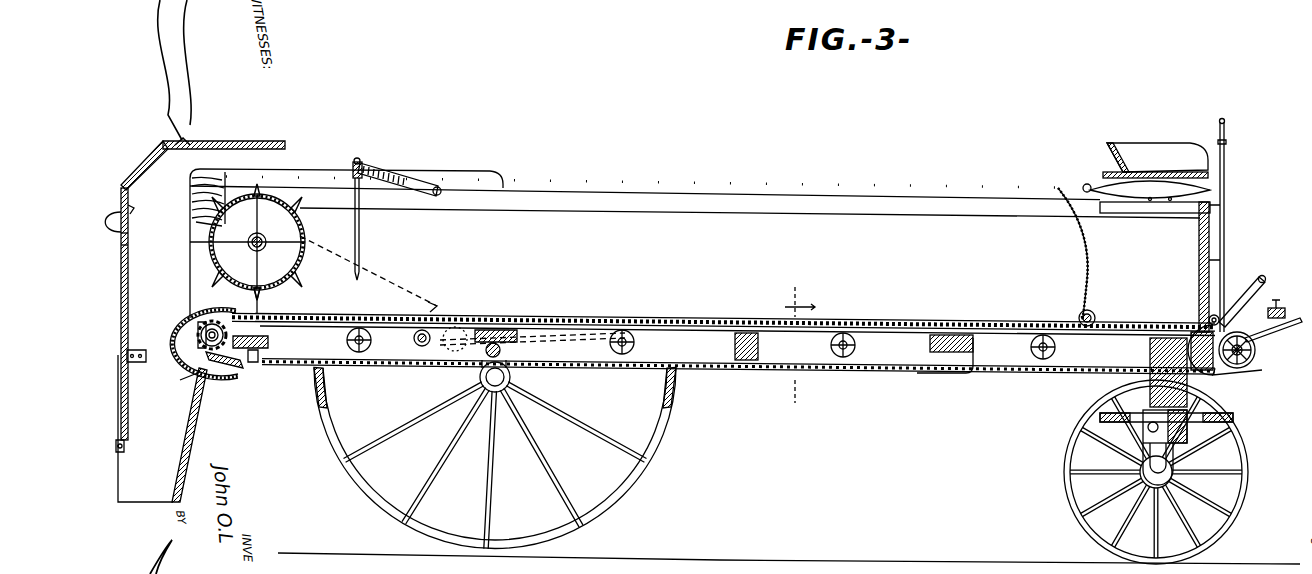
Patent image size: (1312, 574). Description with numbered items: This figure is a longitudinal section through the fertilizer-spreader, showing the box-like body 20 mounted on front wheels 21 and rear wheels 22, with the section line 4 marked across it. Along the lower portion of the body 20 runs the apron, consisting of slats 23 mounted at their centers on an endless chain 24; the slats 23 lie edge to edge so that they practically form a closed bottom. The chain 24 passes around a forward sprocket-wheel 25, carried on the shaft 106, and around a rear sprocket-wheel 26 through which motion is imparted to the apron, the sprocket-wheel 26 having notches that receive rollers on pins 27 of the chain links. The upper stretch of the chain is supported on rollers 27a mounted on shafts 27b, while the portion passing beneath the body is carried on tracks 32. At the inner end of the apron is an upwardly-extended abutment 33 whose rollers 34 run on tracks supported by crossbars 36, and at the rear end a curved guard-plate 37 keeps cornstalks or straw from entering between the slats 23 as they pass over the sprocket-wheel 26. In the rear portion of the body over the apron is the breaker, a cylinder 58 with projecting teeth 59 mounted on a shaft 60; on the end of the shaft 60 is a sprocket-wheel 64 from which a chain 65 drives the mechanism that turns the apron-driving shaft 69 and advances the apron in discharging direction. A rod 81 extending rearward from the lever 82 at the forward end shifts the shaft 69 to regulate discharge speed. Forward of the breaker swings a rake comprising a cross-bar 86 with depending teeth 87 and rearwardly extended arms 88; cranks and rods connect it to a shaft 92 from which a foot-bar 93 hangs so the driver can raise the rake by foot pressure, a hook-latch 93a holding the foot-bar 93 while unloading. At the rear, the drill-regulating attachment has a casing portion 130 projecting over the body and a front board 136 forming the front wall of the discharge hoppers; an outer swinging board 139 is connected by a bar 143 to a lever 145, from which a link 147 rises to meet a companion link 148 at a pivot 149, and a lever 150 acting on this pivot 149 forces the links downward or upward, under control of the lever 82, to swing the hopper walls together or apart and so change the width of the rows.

The section line 4 is at (800, 344).
The box-like body 20 is at (695, 243).
The front wheels 21 is at (1063, 463).
The rear wheels 22 is at (665, 454).
The slats 23 is at (937, 321).
The endless chain 24 is at (1127, 329).
The sprocket-wheel 25 is at (1234, 376).
The sprocket-wheel 26 is at (236, 352).
The pins 27 is at (724, 349).
The rollers 27a is at (358, 327).
The shafts 27b is at (359, 352).
The tracks 32 is at (950, 375).
The abutment 33 is at (1084, 256).
The rollers 34 is at (1094, 312).
The crossbars 36 is at (748, 360).
The guard-plate 37 is at (186, 341).
The cylinder 58 is at (305, 226).
The teeth 59 is at (218, 283).
The shaft 60 is at (190, 200).
The sprocket-wheel 64 is at (238, 252).
The chain 65 is at (392, 294).
The apron-driving shaft 69 is at (430, 336).
The rod 81 is at (558, 340).
The lever 82 is at (1226, 228).
The cross-bar 86 is at (354, 163).
The teeth 87 is at (361, 238).
The arms 88 is at (405, 172).
The shaft 92 is at (1208, 320).
The foot-bar 93 is at (1256, 295).
The hook-latch 93a is at (1268, 314).
The shaft 106 is at (1255, 354).
The projecting portion 130 is at (250, 143).
The front board 136 is at (203, 435).
The outer swinging board 139 is at (143, 435).
The bar 143 is at (125, 446).
The lever 145 is at (128, 386).
The link 147 is at (128, 245).
The link 148 is at (147, 201).
The pivot 149 is at (128, 233).
The lever 150 is at (118, 212).